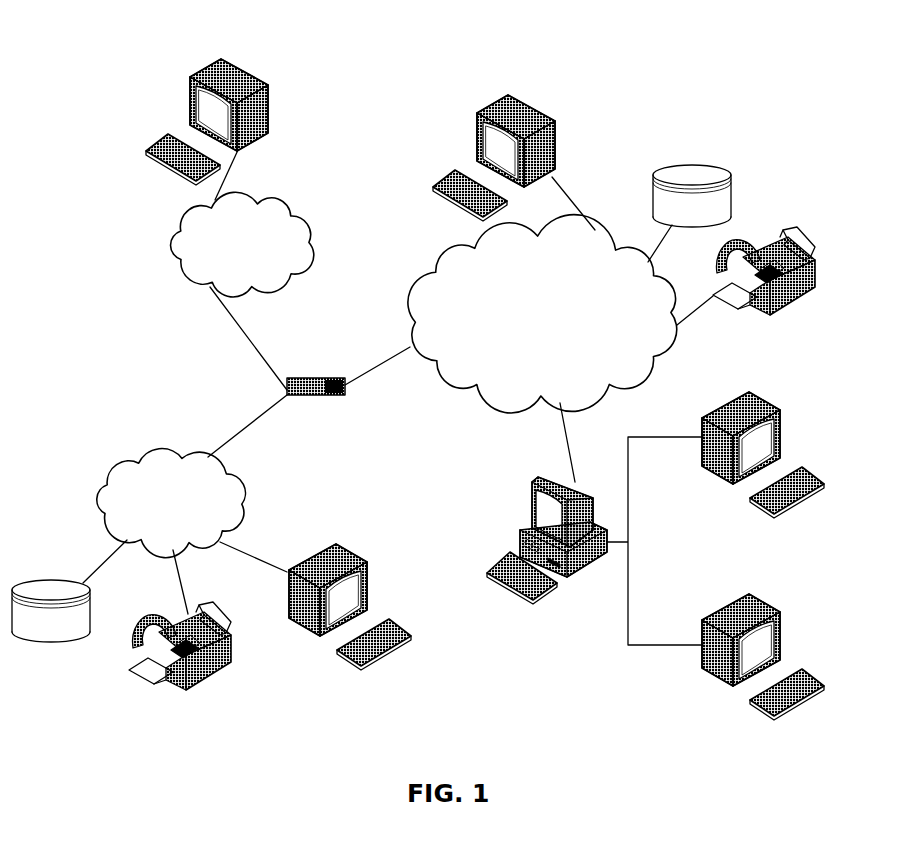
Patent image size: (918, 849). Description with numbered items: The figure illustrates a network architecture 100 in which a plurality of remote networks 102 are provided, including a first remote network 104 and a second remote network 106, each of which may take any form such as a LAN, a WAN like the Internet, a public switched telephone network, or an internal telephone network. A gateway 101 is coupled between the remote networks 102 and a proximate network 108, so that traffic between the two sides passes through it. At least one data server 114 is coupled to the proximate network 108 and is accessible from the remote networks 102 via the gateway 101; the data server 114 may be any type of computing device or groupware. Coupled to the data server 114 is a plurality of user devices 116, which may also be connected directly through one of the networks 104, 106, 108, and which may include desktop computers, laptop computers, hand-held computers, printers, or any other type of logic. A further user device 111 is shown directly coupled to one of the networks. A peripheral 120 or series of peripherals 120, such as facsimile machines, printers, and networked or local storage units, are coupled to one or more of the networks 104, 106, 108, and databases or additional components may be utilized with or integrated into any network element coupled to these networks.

The architecture 100 is at (124, 42).
The gateway 101 is at (300, 377).
The remote networks 102 is at (152, 303).
The first remote network 104 is at (103, 477).
The second remote network 106 is at (310, 220).
The proximate network 108 is at (640, 378).
The user device 111 is at (557, 128).
The data server 114 is at (532, 497).
The user devices 116 is at (270, 96).
The peripheral 120 is at (52, 642).